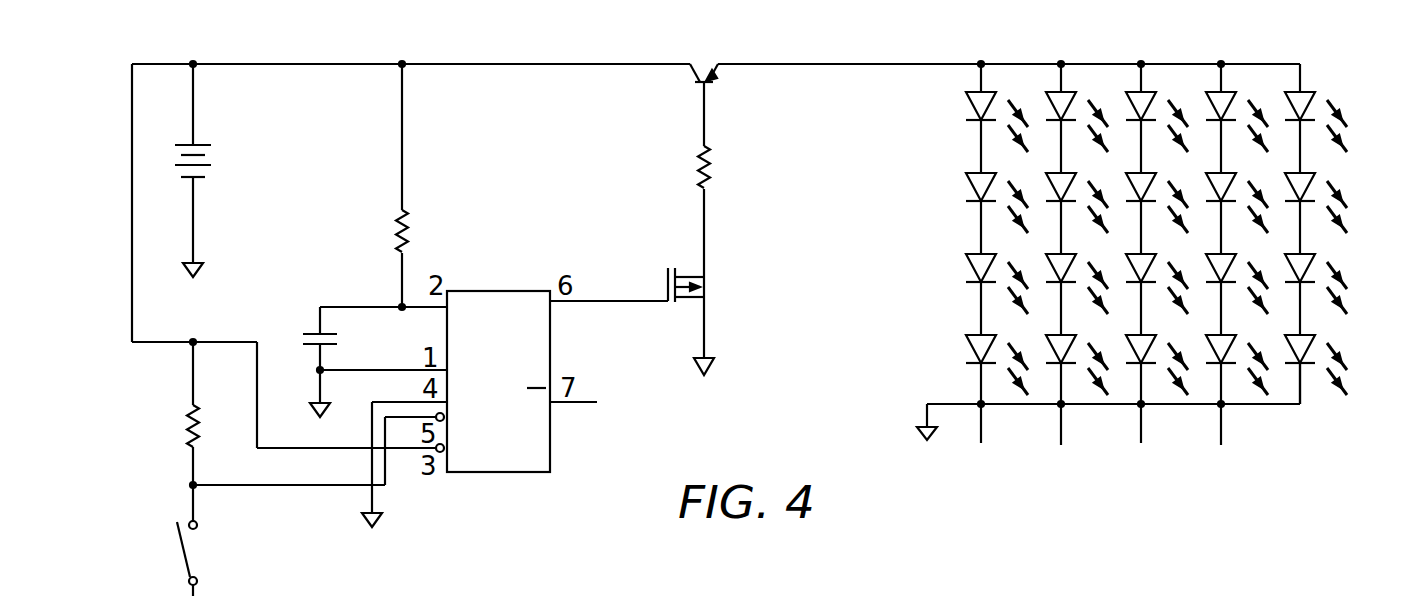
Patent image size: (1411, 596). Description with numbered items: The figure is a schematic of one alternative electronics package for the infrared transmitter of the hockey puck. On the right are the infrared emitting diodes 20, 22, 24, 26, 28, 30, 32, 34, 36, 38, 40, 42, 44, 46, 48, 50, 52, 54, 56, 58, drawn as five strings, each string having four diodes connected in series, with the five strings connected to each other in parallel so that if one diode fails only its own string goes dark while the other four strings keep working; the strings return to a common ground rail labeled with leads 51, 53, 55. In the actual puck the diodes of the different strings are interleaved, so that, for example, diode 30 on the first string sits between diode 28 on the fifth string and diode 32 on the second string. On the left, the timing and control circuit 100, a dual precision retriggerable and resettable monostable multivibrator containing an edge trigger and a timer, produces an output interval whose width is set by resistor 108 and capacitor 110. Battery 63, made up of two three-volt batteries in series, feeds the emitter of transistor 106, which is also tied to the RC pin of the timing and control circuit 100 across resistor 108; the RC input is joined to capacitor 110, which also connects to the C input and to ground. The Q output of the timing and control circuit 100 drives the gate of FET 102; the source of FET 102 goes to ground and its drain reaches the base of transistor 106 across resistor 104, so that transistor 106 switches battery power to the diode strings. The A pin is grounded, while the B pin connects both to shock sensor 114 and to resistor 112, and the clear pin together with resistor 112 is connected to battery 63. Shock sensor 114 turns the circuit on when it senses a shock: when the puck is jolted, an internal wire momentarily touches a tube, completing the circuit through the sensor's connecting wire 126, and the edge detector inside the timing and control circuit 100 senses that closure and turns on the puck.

The battery 63 is at (258, 170).
The timing and control circuit 100 is at (547, 338).
The FET 102 is at (735, 300).
The resistor 104 is at (751, 211).
The transistor 106 is at (732, 85).
The resistor 108 is at (445, 213).
The capacitor 110 is at (315, 354).
The resistor 112 is at (188, 418).
The shock sensor 114 is at (177, 552).
The infrared emitting diode 20 is at (975, 109).
The infrared emitting diode 22 is at (1040, 94).
The infrared emitting diode 24 is at (1120, 94).
The infrared emitting diode 26 is at (1200, 94).
The infrared emitting diode 28 is at (1327, 87).
The infrared emitting diode 30 is at (975, 189).
The infrared emitting diode 32 is at (1040, 174).
The infrared emitting diode 34 is at (1120, 174).
The infrared emitting diode 36 is at (1200, 174).
The infrared emitting diode 38 is at (1313, 176).
The infrared emitting diode 40 is at (975, 264).
The infrared emitting diode 42 is at (1040, 253).
The infrared emitting diode 44 is at (1120, 253).
The infrared emitting diode 46 is at (1200, 253).
The infrared emitting diode 48 is at (1313, 258).
The infrared emitting diode 50 is at (975, 350).
The infrared emitting diode 52 is at (1073, 445).
The infrared emitting diode 54 is at (1233, 445).
The infrared emitting diode 56 is at (1199, 334).
The infrared emitting diode 58 is at (1313, 338).
The LED column line 51 is at (981, 443).
The LED column line 53 is at (1141, 443).
The LED column line 55 is at (1331, 401).
The wire 126 is at (846, 591).